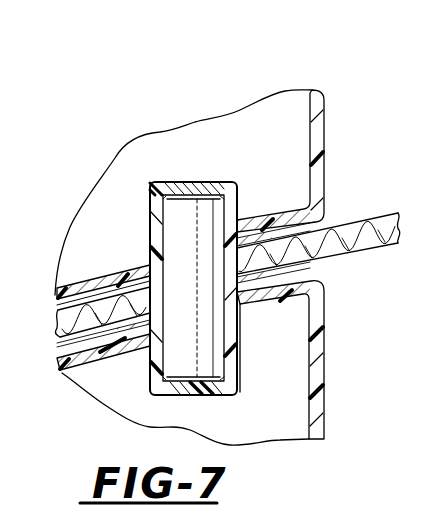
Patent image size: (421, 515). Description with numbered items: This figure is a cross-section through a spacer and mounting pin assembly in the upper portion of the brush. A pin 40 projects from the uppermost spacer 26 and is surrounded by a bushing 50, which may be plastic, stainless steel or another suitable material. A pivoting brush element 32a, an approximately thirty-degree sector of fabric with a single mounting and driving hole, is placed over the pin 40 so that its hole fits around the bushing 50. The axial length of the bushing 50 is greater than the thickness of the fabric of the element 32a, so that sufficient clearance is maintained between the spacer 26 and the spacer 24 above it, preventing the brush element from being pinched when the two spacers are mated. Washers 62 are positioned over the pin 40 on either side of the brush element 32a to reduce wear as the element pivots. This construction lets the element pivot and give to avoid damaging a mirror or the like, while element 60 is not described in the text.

The spacer 24 is at (325, 105).
The uppermost spacer 26 is at (325, 357).
The pivoting brush element 32a is at (334, 238).
The pin 40 is at (179, 211).
The bushing 50 is at (122, 278).
The fastener 60 is at (410, 414).
The washer 62 is at (256, 244).